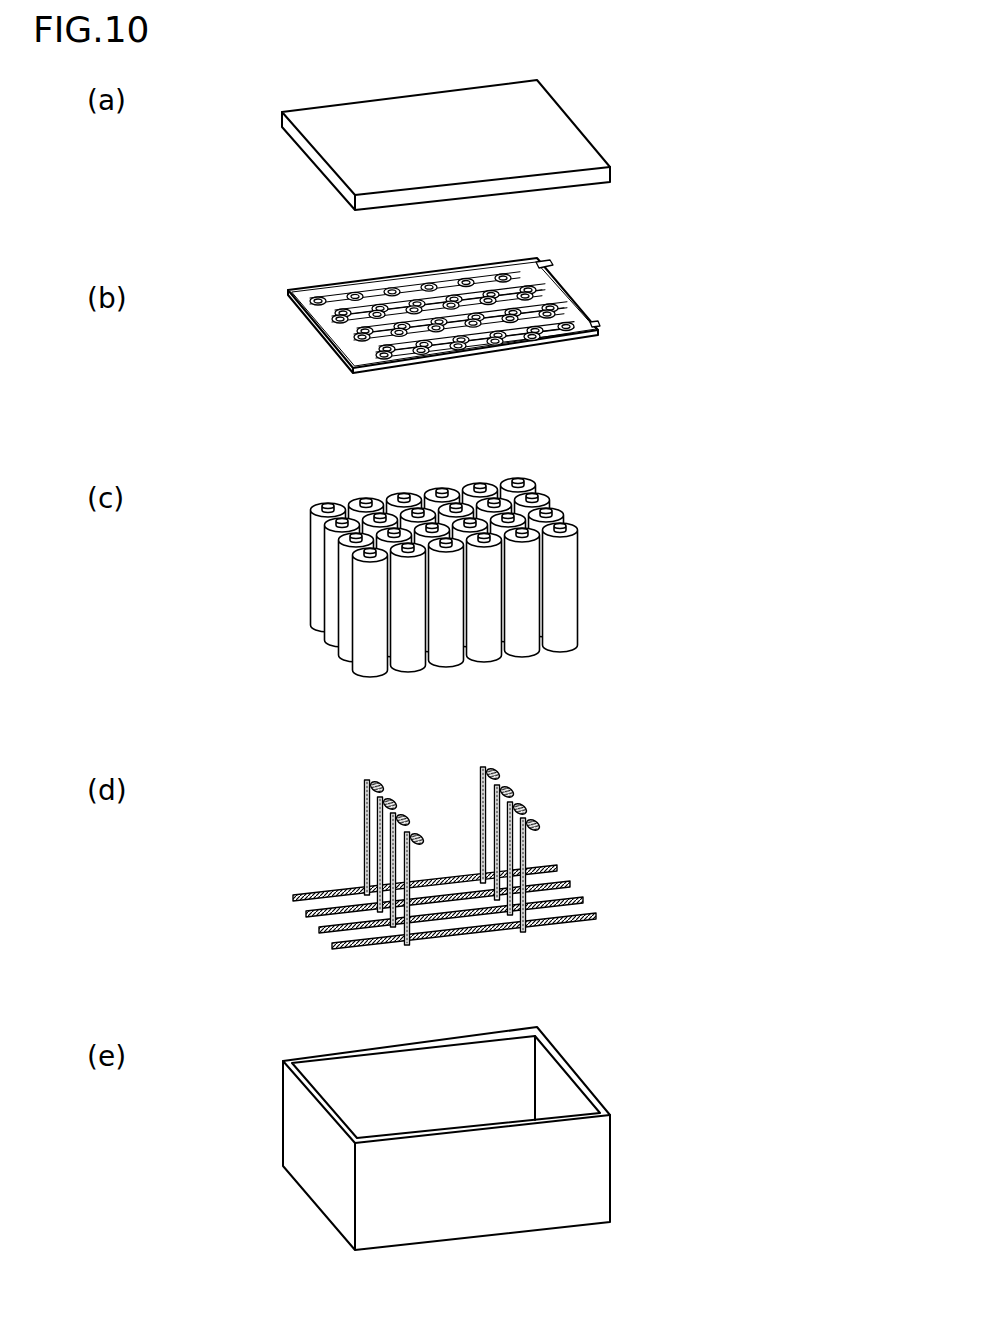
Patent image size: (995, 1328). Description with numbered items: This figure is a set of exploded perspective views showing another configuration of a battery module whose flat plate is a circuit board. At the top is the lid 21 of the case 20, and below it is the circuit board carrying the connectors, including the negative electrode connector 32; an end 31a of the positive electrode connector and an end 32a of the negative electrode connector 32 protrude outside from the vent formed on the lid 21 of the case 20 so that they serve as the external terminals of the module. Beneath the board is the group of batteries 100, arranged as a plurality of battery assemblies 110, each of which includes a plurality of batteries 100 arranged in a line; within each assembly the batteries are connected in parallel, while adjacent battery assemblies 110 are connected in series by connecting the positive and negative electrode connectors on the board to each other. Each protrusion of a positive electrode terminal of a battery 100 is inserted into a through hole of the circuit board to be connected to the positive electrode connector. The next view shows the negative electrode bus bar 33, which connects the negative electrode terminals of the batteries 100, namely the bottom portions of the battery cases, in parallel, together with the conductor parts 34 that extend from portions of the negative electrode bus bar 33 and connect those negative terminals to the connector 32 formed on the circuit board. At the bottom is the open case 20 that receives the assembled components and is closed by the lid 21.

The case 20 is at (495, 750).
The lid 21 is at (553, 116).
The end of the positive electrode connector 31a is at (550, 273).
The negative electrode connector 32 is at (490, 352).
The end of the negative electrode connector 32a is at (598, 324).
The negative electrode bus bar 33 is at (594, 914).
The conductor parts 34 is at (525, 843).
The batteries 100 is at (509, 578).
The battery assemblies 110 is at (673, 550).